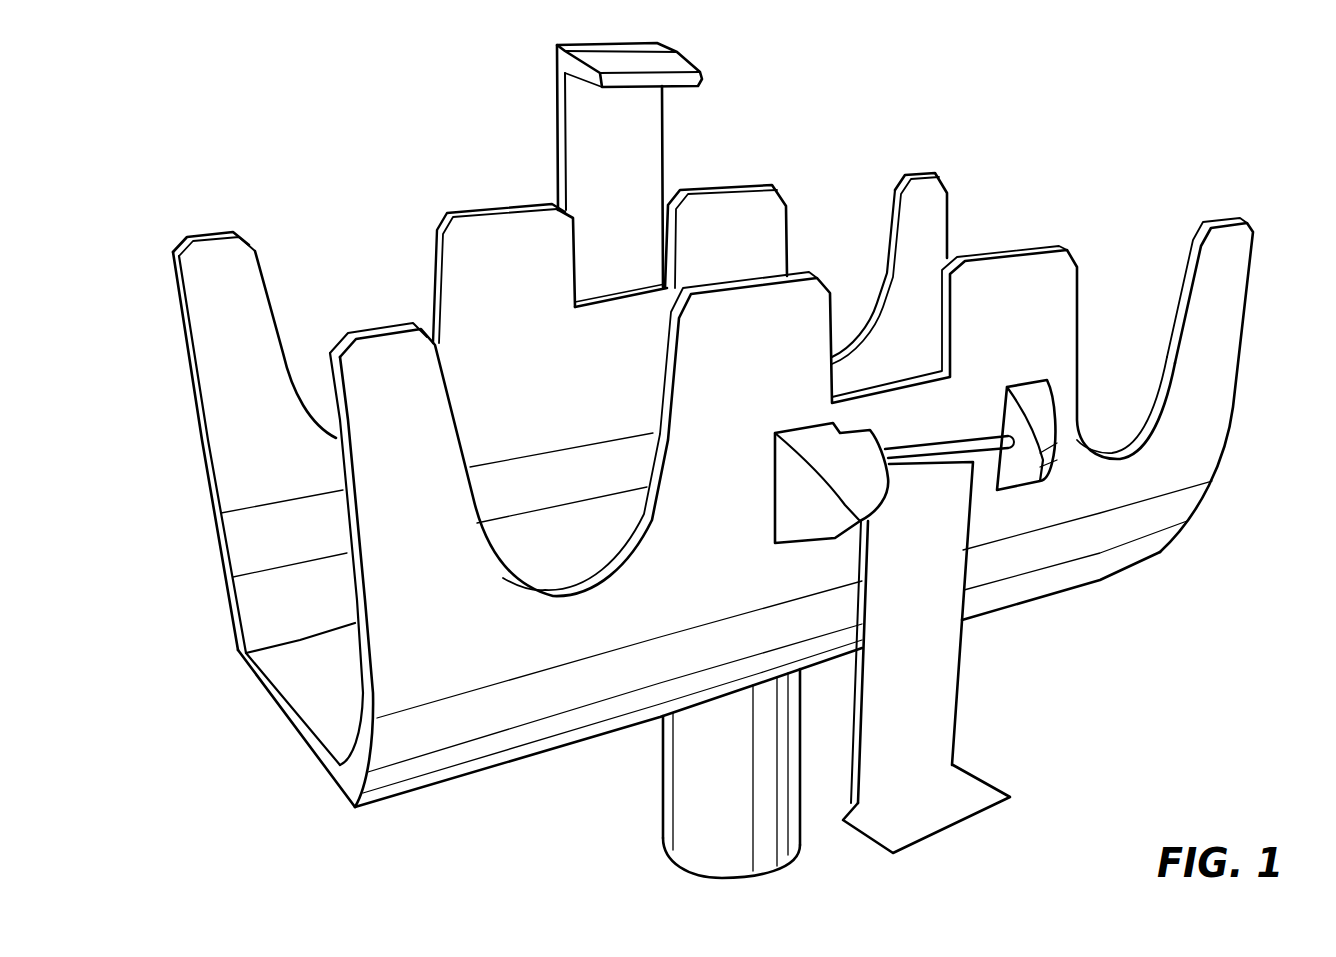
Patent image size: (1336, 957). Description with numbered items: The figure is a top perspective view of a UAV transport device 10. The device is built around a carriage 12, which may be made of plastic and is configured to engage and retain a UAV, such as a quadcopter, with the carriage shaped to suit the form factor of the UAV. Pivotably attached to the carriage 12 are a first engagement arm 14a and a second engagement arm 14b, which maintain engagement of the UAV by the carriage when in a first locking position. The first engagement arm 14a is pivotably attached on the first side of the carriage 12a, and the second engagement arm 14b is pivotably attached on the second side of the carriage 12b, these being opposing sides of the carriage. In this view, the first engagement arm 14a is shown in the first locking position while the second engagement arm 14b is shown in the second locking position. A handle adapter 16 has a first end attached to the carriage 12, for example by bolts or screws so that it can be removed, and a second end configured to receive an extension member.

The transport device 10 is at (190, 148).
The carriage 12 is at (1128, 572).
The first side of the carriage 12a is at (170, 310).
The second side of the carriage 12b is at (1262, 298).
The first engagement arm 14a is at (556, 57).
The second engagement arm 14b is at (937, 715).
The handle adapter 16 is at (703, 793).